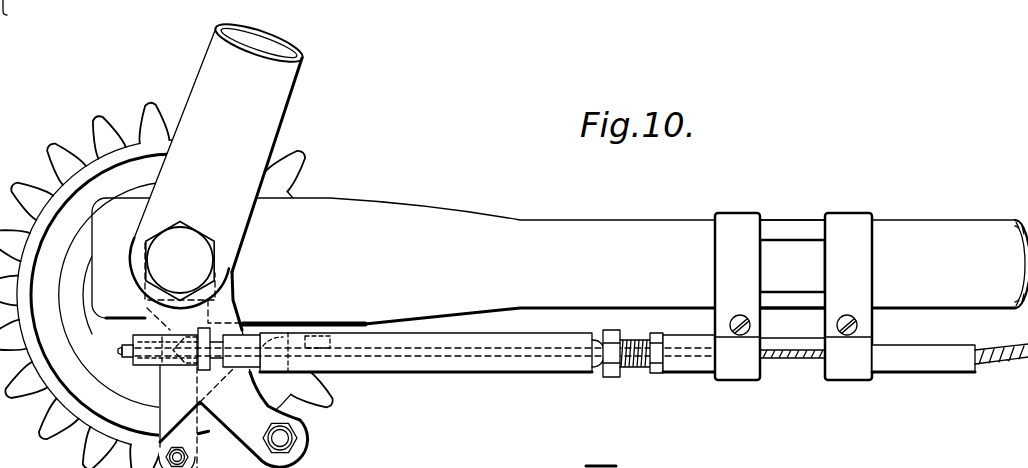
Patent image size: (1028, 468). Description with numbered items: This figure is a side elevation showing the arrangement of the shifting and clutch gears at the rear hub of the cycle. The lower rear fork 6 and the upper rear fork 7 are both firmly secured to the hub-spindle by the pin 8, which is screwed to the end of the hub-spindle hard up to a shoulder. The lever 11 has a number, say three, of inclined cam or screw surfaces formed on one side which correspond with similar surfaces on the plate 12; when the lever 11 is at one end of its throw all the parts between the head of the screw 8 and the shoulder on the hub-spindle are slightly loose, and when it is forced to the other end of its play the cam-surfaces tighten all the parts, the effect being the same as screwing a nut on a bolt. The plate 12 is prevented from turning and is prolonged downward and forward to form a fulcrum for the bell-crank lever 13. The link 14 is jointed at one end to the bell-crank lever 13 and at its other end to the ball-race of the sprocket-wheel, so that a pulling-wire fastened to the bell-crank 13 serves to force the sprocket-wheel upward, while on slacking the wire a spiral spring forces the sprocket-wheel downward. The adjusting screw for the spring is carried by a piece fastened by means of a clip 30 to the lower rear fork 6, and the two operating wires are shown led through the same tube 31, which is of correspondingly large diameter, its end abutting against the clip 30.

The lower rear fork 6 is at (560, 261).
The upper rear fork 7 is at (218, 162).
The pin 8 is at (179, 265).
The lever 11 is at (172, 323).
The plate 12 is at (234, 369).
The bell-crank lever 13 is at (196, 458).
The link 14 is at (171, 384).
The clip 30 is at (793, 296).
The tube 31 is at (937, 363).